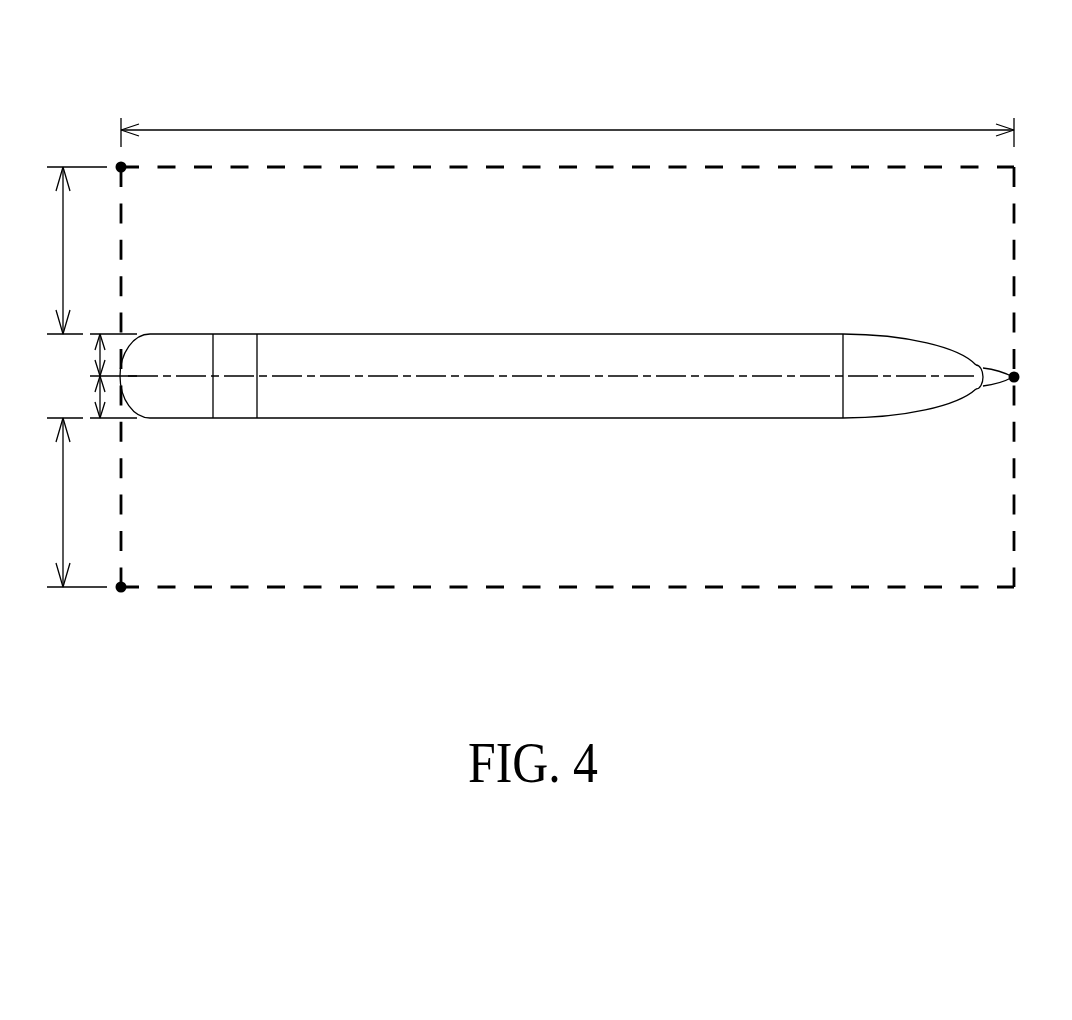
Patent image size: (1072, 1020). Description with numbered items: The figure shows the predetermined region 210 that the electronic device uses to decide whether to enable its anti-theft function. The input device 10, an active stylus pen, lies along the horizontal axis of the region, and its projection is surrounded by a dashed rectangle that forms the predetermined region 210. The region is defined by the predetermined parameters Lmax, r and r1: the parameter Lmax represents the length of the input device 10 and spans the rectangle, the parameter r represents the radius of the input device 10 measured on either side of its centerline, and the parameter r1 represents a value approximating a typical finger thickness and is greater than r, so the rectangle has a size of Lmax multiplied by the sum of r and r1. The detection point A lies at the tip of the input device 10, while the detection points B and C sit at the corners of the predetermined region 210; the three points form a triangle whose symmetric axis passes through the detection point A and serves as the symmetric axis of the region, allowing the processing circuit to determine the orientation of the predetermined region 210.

The input device 10 is at (452, 353).
The predetermined region 210 is at (857, 590).
The detection point A is at (1028, 378).
The detection point B is at (114, 153).
The detection point C is at (121, 603).
The predetermined parameter Lmax is at (567, 117).
The predetermined parameter r1 is at (65, 377).
The predetermined parameter r is at (107, 376).